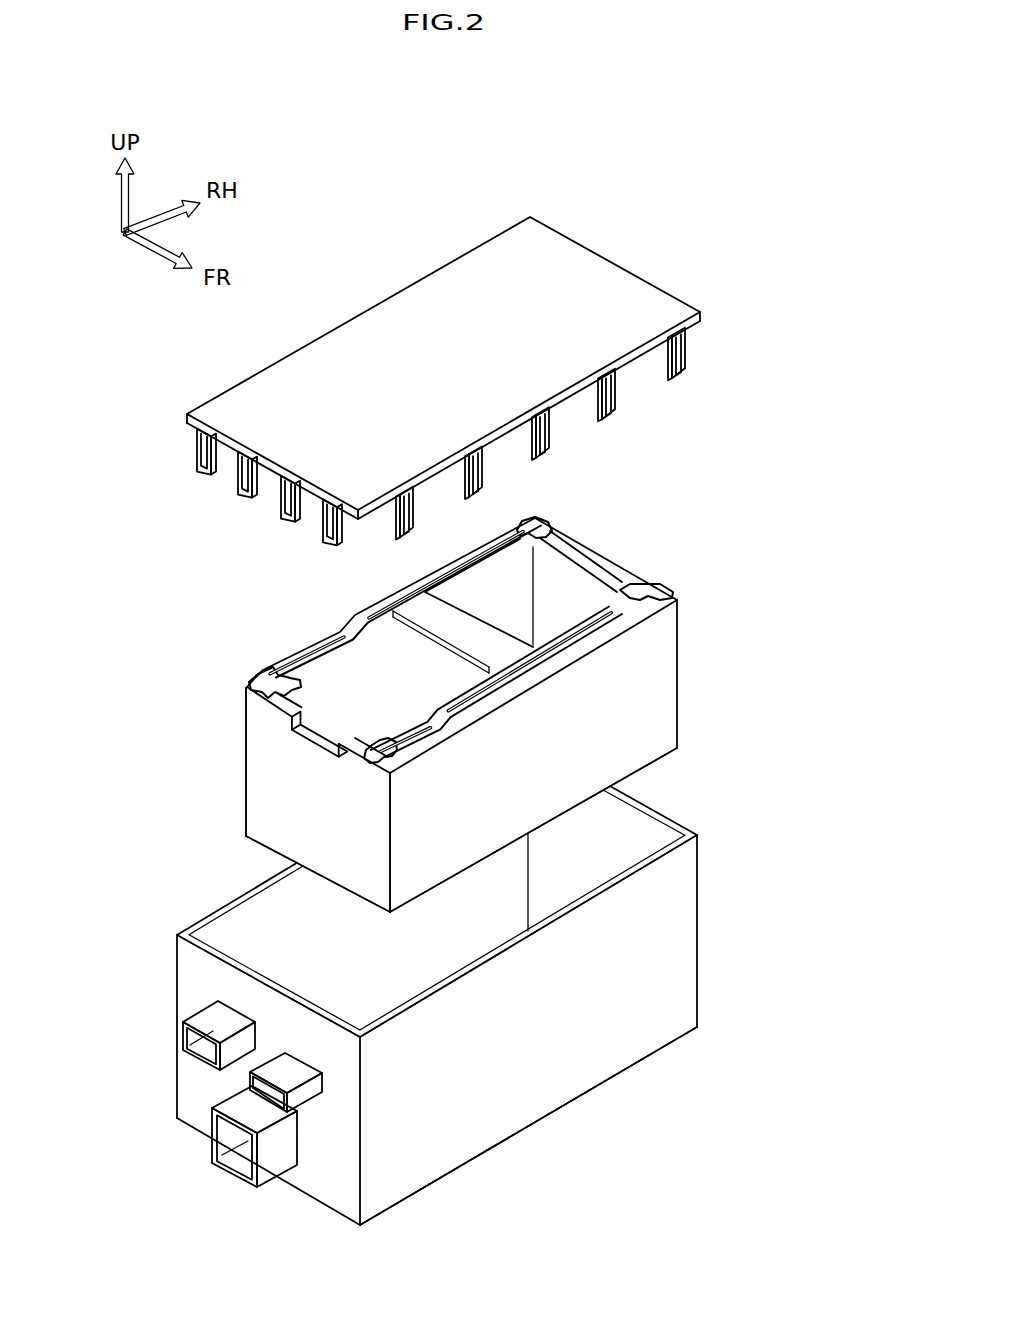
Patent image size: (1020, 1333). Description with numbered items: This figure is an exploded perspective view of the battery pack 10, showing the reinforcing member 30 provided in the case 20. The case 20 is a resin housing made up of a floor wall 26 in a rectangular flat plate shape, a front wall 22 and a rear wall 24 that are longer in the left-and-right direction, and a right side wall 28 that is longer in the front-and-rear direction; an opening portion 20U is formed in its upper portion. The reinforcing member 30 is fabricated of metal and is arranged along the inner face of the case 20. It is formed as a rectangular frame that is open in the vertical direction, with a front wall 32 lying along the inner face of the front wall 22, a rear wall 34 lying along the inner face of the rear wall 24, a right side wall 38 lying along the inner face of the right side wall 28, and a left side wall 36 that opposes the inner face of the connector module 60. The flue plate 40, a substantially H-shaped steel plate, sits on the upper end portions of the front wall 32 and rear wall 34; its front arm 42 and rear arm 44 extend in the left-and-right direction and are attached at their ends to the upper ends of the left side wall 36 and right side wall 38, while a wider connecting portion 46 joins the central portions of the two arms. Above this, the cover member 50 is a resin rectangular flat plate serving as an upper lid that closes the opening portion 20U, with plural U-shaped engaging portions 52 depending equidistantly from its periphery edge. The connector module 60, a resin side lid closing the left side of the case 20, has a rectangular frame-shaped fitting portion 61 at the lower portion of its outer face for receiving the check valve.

The battery pack 10 is at (641, 239).
The case 20 is at (708, 868).
The opening portion 20U is at (195, 912).
The front wall 22 is at (630, 1030).
The rear wall 24 is at (270, 898).
The floor wall 26 is at (588, 1095).
The right side wall 28 is at (642, 822).
The reinforcing member 30 is at (690, 656).
The front wall 32 is at (450, 855).
The rear wall 34 is at (515, 553).
The left side wall 36 is at (272, 775).
The right side wall 38 is at (620, 565).
The flue plate 40 is at (287, 640).
The front arm 42 is at (520, 677).
The rear arm 44 is at (345, 596).
The connecting portion 46 is at (420, 633).
The cover member 50 is at (447, 258).
The engaging portions 52 is at (690, 372).
The connector module 60 is at (213, 1130).
The fitting portion 61 is at (205, 1165).